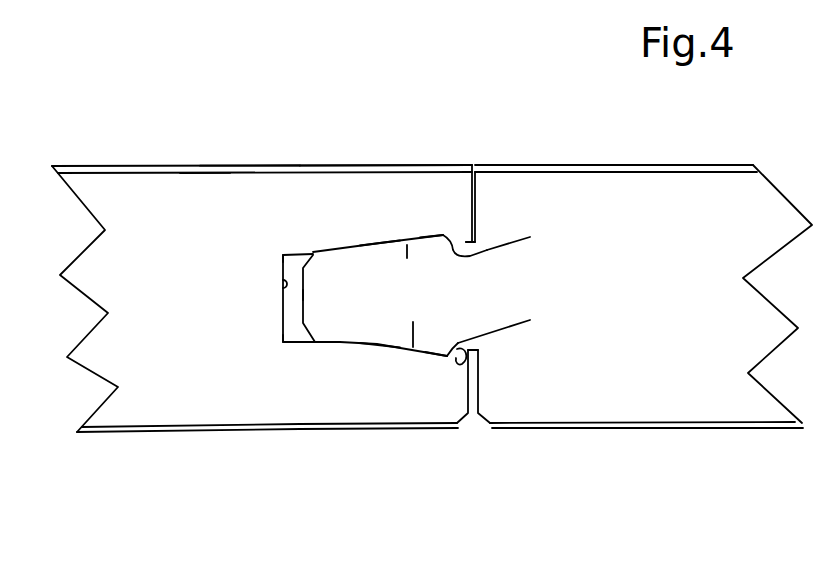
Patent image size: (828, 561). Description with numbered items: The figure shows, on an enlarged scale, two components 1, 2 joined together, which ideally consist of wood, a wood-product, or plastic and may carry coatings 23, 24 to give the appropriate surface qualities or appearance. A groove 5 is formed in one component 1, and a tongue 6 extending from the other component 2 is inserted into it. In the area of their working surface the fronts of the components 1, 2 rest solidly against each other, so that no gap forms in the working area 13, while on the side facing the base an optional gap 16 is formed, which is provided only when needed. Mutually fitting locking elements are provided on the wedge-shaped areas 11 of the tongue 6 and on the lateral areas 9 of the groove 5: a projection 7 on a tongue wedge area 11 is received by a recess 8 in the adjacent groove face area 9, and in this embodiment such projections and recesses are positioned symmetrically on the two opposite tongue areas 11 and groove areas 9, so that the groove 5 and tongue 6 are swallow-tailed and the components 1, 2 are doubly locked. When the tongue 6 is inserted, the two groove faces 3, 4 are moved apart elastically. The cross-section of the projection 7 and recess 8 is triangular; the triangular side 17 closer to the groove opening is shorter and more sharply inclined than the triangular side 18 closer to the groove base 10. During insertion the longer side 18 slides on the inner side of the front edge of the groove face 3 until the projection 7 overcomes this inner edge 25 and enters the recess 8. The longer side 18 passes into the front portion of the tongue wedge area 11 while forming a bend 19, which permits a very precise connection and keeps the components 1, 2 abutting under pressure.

The component 1 is at (174, 215).
The component 2 is at (702, 197).
The groove face 3 is at (383, 193).
The groove face 4 is at (311, 405).
The groove 5 is at (288, 307).
The tongue 6 is at (358, 315).
The projection 7 is at (442, 245).
The recess 8 is at (447, 232).
The lateral area of the groove 9 is at (290, 258).
The groove base 10 is at (283, 283).
The wedge-shaped area of the tongue 11 is at (340, 256).
The working area 13 is at (261, 163).
The gap 16 is at (472, 419).
The triangular side 17 is at (516, 281).
The triangular side 18 is at (401, 296).
The bend 19 is at (379, 242).
The coating 23 is at (205, 172).
The coating 24 is at (584, 167).
The inner edge 25 is at (466, 239).